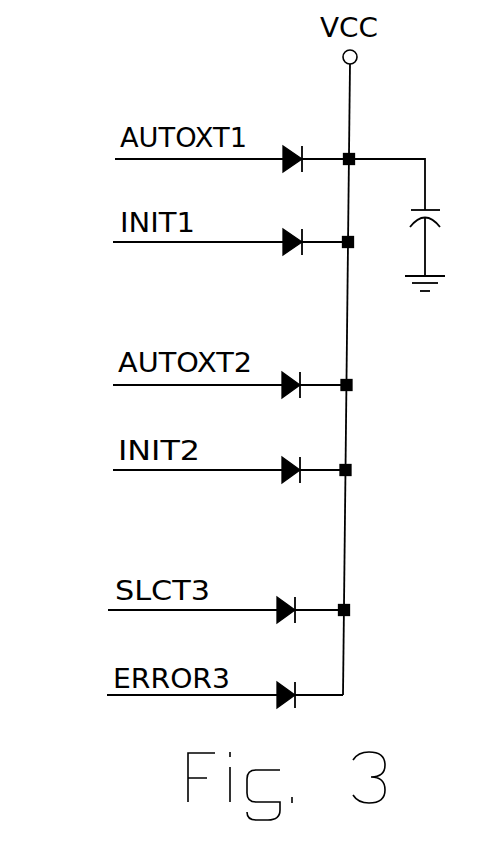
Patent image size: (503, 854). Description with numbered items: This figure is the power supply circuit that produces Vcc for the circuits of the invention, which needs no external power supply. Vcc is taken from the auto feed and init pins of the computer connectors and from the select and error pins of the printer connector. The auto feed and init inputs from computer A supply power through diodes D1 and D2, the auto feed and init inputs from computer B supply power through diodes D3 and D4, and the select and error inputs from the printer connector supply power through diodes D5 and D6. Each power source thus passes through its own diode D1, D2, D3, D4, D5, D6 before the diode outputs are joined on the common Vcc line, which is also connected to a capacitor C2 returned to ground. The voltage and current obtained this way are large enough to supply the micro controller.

The diode D1 is at (291, 141).
The diode D2 is at (291, 224).
The diode D3 is at (291, 365).
The diode D4 is at (291, 453).
The diode D5 is at (290, 591).
The diode D6 is at (290, 676).
The capacitor C2 is at (418, 225).